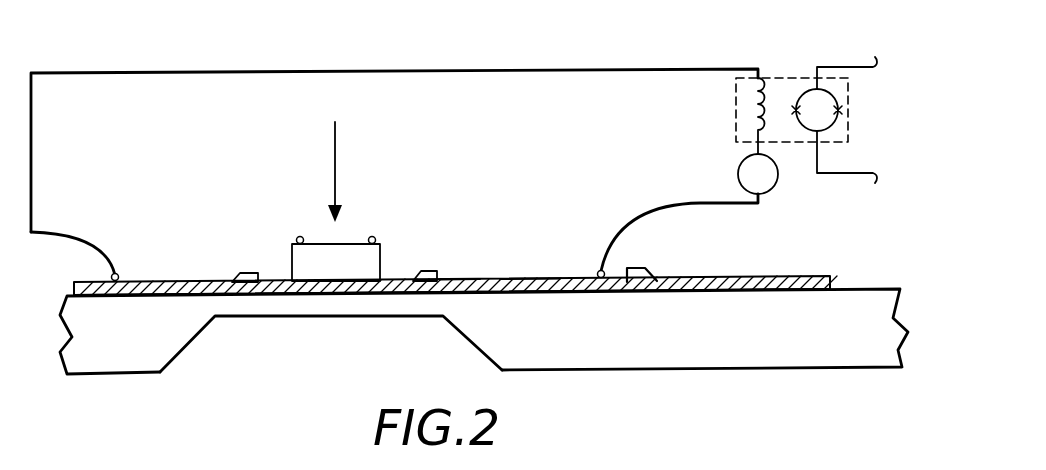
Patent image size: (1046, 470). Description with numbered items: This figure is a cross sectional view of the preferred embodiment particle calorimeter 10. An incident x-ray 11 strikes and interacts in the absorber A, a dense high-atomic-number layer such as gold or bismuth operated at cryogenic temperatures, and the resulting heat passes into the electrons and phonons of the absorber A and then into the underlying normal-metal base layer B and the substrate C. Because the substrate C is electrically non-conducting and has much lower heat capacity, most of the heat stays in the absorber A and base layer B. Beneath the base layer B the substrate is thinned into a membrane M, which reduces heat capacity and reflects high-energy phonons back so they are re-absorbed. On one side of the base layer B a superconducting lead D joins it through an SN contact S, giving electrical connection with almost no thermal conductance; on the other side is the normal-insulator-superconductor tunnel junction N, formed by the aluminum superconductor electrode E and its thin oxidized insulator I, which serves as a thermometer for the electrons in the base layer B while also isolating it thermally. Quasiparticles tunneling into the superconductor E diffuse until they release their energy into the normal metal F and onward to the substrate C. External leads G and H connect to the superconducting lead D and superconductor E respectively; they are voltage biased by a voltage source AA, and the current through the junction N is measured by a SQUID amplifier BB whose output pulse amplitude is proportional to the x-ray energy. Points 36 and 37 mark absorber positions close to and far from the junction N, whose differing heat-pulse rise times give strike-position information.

The particle calorimeter 10 is at (163, 192).
The incident x-ray 11 is at (337, 168).
The close absorber position 36 is at (375, 238).
The far absorber position 37 is at (298, 238).
The absorber A is at (333, 268).
The base layer B is at (277, 294).
The substrate C is at (172, 371).
The superconducting lead D is at (186, 281).
The superconductor electrode E is at (516, 278).
The normal metal F is at (700, 277).
The lead G is at (100, 251).
The lead H is at (665, 203).
The insulator of tunnel junction I is at (446, 280).
The membrane M is at (356, 316).
The NIS tunnel junction N is at (428, 272).
The SN contact S is at (249, 273).
The voltage source AA is at (776, 186).
The superconducting quantum interference device BB is at (783, 75).